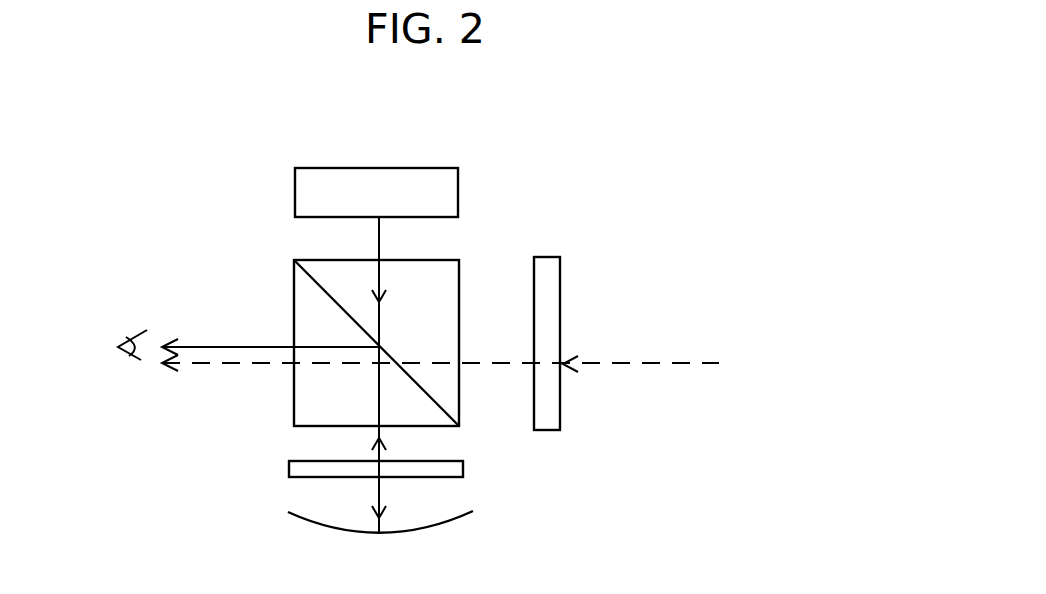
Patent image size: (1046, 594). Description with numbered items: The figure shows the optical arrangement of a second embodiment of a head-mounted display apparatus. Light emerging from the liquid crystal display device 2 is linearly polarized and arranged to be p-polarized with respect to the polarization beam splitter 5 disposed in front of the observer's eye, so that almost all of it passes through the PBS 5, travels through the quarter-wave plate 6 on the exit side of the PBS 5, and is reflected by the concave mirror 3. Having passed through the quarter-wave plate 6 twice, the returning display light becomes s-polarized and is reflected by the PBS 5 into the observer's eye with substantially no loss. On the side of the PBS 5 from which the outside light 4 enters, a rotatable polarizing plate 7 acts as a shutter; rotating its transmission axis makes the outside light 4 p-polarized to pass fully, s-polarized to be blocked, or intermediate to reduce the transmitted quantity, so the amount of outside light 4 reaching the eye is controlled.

The liquid crystal display device 2 is at (333, 173).
The concave mirror 3 is at (455, 517).
The outside light 4 is at (683, 364).
The polarization beam splitter 5 is at (447, 267).
The quarter-wave plate 6 is at (463, 469).
The rotatable polarizing plate 7 is at (543, 257).